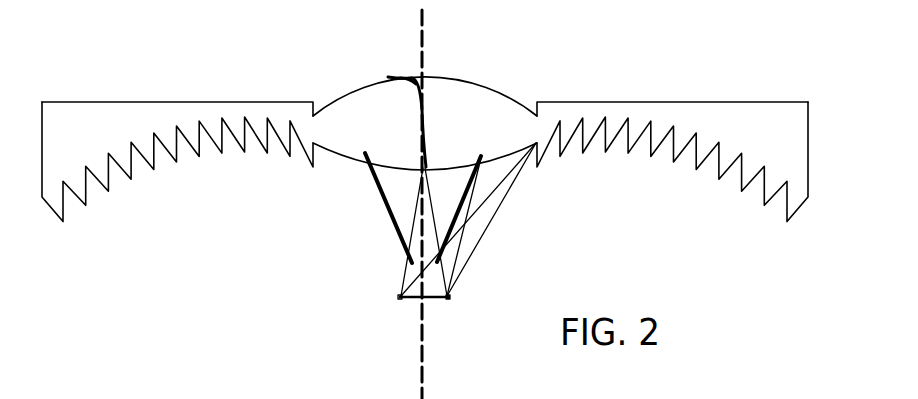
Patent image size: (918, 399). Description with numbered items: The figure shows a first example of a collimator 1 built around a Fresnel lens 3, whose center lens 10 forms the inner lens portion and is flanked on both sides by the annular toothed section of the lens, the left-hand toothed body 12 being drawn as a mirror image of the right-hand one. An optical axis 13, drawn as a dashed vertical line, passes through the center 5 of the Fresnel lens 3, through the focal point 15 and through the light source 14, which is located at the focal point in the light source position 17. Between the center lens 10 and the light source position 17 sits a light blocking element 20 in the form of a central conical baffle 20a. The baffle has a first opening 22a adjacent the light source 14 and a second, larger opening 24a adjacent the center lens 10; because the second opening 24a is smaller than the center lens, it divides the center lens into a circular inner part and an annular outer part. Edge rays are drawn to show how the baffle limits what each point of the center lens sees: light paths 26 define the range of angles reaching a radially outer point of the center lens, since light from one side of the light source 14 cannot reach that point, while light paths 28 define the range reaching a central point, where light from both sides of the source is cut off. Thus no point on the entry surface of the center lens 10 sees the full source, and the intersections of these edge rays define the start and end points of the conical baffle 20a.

The collimator 1 is at (520, 80).
The Fresnel lens 3 is at (638, 92).
The center of the Fresnel lens 5 is at (387, 77).
The center lens 10 is at (362, 83).
The left heat sink body 12 is at (200, 88).
The optical axis 13 is at (426, 89).
The light source 14 is at (374, 313).
The focal point 15 is at (423, 298).
The light source position 17 is at (425, 298).
The light blocking element 20 is at (473, 178).
The central conical baffle 20a is at (418, 215).
The first opening 22a is at (417, 271).
The second opening 24a is at (411, 148).
The light paths 26 is at (482, 204).
The light paths 28 is at (435, 215).